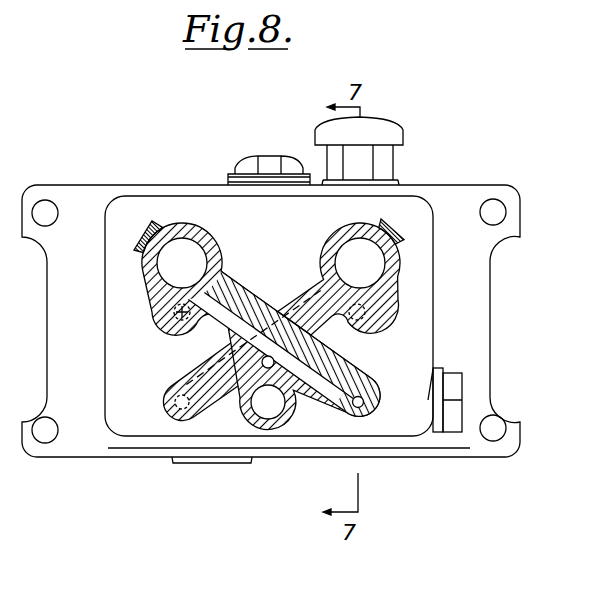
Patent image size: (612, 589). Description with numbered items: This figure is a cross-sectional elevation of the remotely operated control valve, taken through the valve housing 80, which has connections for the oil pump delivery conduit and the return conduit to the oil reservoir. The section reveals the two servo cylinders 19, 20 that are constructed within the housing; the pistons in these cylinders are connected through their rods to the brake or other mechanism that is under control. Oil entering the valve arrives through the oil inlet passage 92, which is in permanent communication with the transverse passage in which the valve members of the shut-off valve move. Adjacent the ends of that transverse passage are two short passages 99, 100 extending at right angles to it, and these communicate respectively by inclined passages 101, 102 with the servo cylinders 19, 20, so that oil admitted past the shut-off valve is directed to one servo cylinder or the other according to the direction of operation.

The valve housing 80 is at (218, 203).
The servo cylinder 19 is at (165, 267).
The servo cylinder 20 is at (373, 277).
The oil inlet passage 92 is at (263, 407).
The short passage 99 is at (360, 402).
The short passage 100 is at (165, 402).
The inclined passage 101 is at (339, 387).
The inclined passage 102 is at (205, 390).